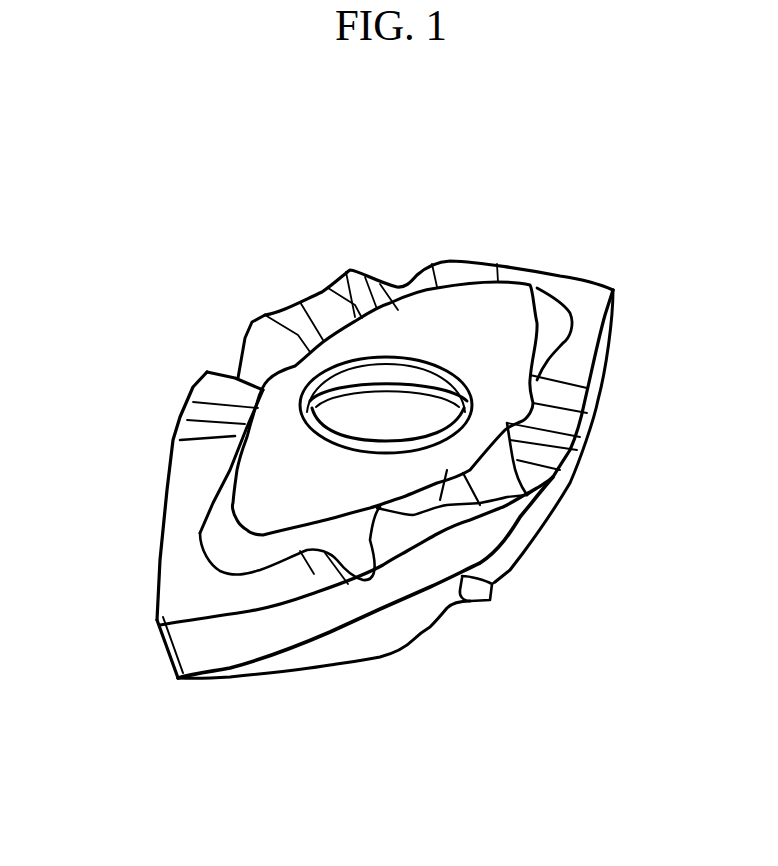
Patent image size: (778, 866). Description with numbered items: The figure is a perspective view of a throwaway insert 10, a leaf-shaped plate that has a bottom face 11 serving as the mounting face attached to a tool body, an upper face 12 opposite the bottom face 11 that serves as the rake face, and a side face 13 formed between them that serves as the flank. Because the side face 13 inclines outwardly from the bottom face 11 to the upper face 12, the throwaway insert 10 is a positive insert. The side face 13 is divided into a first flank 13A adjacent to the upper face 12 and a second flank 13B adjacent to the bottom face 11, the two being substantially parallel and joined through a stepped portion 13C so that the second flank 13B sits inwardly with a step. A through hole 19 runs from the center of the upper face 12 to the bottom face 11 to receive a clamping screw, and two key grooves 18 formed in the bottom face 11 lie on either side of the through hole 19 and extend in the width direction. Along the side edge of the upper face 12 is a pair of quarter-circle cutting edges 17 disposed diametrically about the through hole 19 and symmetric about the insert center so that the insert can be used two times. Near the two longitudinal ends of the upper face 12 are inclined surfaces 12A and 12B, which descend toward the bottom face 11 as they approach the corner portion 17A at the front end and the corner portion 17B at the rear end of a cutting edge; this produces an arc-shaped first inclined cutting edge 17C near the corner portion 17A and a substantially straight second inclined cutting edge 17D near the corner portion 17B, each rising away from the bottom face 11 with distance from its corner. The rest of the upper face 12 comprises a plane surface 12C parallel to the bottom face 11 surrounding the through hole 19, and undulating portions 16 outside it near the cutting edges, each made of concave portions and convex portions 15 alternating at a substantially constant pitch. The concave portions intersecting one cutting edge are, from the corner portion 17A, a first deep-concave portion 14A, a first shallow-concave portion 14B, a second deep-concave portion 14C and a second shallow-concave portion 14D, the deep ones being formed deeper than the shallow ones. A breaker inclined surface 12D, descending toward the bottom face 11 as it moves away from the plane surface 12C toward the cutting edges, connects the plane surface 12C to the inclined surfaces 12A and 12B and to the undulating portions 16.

The throwaway insert 10 is at (604, 163).
The bottom face 11 is at (403, 645).
The upper face 12 is at (457, 302).
The inclined surface 12A is at (175, 580).
The inclined surface 12B is at (573, 290).
The plane surface 12C is at (503, 292).
The breaker inclined surface 12D is at (217, 545).
The side face 13 is at (213, 773).
The first flank 13A is at (233, 674).
The second flank 13B is at (263, 657).
The stepped portion 13C is at (330, 649).
The first deep-concave portion 14A is at (407, 283).
The first shallow-concave portion 14B is at (295, 324).
The second deep-concave portion 14C is at (243, 360).
The second shallow-concave portion 14D is at (190, 407).
The convex portions 15 is at (350, 287).
The undulating portions 16 is at (293, 312).
The cutting edges 17 is at (310, 307).
The corner portion 17A is at (153, 629).
The corner portion 17B is at (612, 287).
The first inclined cutting edge 17C is at (560, 290).
The second inclined cutting edge 17D is at (165, 492).
The key grooves 18 is at (467, 602).
The through hole 19 is at (400, 407).